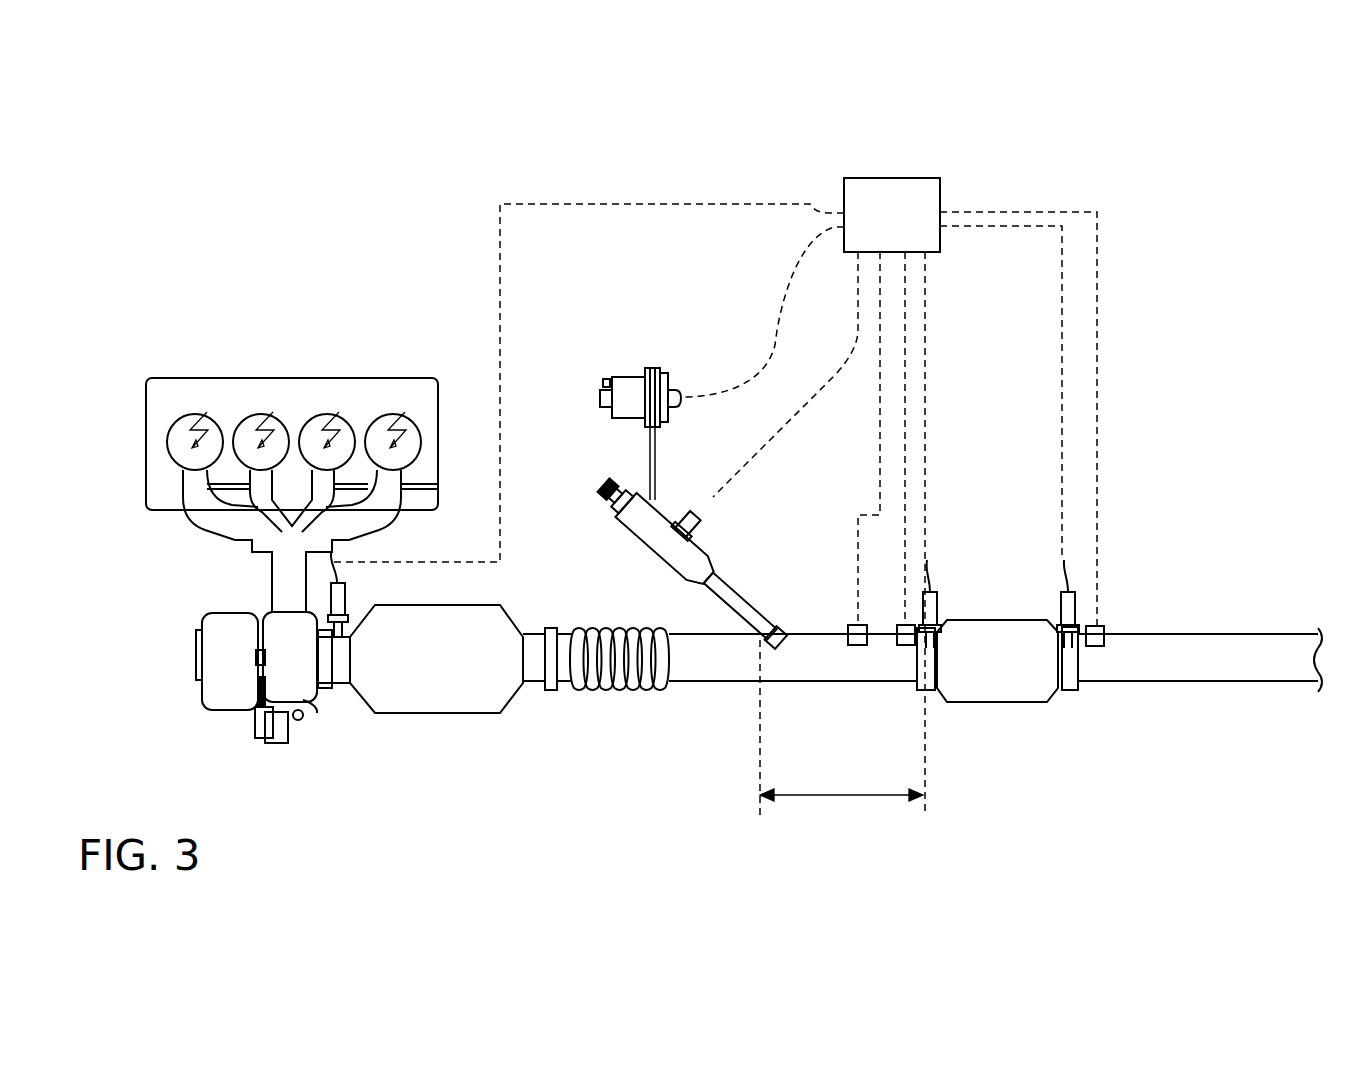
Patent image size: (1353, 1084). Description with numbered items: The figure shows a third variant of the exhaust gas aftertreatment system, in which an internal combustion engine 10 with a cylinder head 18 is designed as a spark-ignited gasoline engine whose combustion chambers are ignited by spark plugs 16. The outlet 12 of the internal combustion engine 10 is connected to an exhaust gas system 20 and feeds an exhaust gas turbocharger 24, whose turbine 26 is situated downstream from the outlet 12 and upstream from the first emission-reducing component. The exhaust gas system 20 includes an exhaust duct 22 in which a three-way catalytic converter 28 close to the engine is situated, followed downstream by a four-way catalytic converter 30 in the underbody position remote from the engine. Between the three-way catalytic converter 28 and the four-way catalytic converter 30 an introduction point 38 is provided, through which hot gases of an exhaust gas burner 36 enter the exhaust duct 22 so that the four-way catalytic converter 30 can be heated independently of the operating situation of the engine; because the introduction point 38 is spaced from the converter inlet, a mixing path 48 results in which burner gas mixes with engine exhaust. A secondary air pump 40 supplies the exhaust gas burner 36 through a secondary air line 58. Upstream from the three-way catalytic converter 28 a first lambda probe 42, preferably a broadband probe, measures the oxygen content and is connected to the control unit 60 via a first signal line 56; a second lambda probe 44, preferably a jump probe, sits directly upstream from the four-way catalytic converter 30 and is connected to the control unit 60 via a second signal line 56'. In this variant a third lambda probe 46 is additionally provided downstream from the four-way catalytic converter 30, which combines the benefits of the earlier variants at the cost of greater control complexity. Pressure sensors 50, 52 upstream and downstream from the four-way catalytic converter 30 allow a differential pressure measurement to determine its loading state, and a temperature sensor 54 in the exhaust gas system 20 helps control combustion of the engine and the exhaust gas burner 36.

The internal combustion engine 10 is at (156, 380).
The outlet 12 is at (292, 536).
The spark plug 16 is at (178, 430).
The cylinder head 18 is at (397, 504).
The exhaust gas system 20 is at (1125, 393).
The exhaust duct 22 is at (705, 672).
The exhaust gas turbocharger 24 is at (243, 741).
The turbine 26 is at (298, 721).
The three-way catalytic converter close to the engine 28 is at (434, 712).
The four-way catalytic converter 30 is at (972, 692).
The exhaust gas burner 36 is at (698, 553).
The introduction point 38 is at (767, 634).
The secondary air pump 40 is at (637, 382).
The first lambda probe 42 is at (346, 600).
The second lambda probe 44 is at (929, 608).
The third lambda probe 46 is at (1063, 608).
The mixing path 48 is at (841, 727).
The pressure sensor 50 is at (900, 625).
The pressure sensor 52 is at (1102, 625).
The temperature sensor 54 is at (848, 625).
The first signal line 56 is at (595, 380).
The second signal line 56' is at (977, 513).
The secondary air line 58 is at (655, 470).
The control unit 60 is at (930, 190).